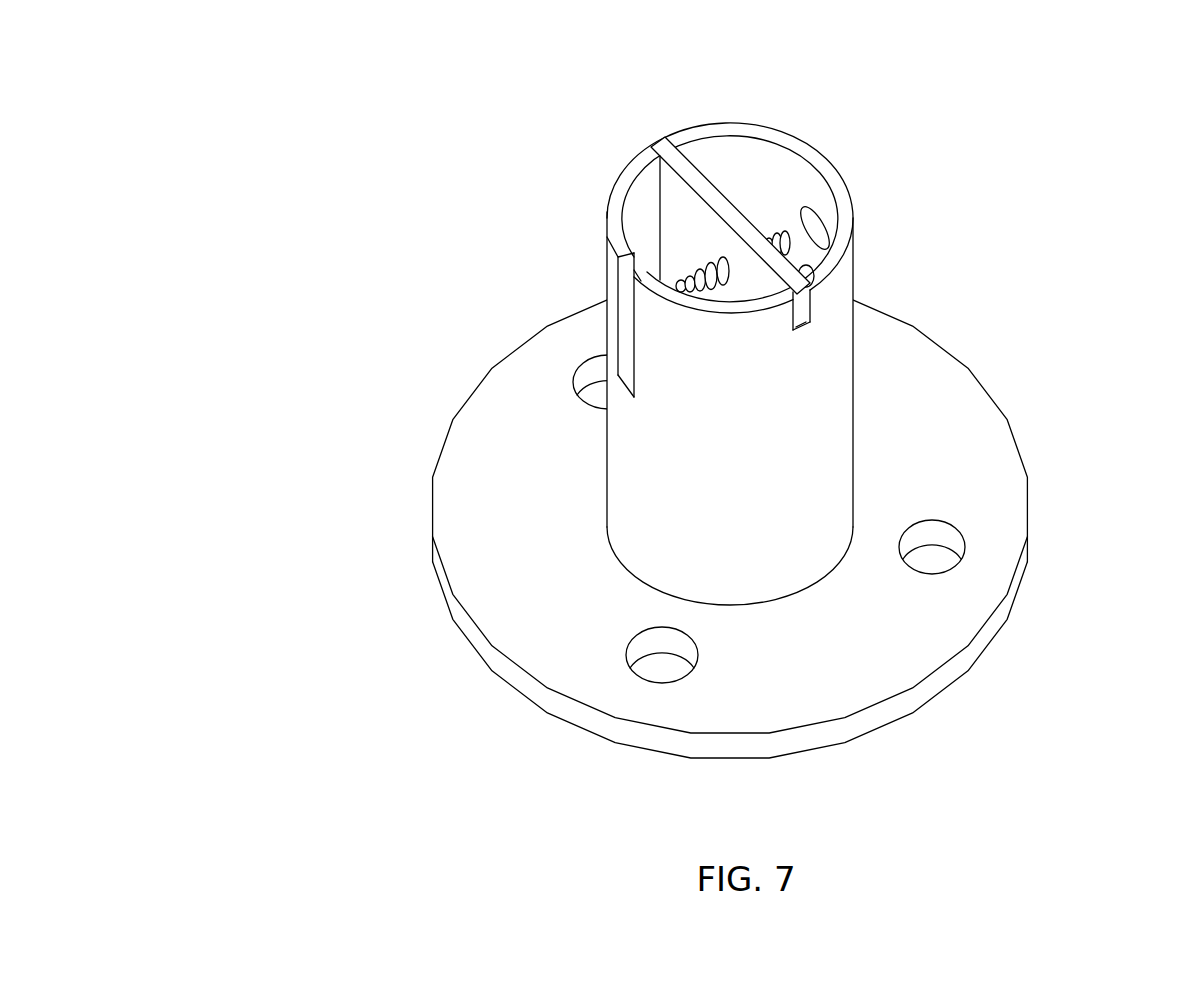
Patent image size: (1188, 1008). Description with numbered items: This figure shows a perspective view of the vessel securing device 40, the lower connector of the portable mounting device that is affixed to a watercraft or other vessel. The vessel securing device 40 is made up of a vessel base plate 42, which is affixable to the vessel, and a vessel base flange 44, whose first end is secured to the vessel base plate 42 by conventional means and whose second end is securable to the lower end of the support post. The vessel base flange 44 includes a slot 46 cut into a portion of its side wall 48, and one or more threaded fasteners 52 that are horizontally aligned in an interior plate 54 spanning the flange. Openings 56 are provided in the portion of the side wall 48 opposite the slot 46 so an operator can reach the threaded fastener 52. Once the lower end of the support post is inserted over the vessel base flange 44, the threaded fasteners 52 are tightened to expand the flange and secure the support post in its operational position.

The vessel securing device 40 is at (398, 411).
The vessel base plate 42 is at (955, 465).
The vessel base flange 44 is at (636, 450).
The slot 46 is at (617, 352).
The side wall 48 is at (675, 527).
The threaded fastener 52 is at (697, 275).
The interior plate 54 is at (708, 181).
The openings 56 is at (806, 271).